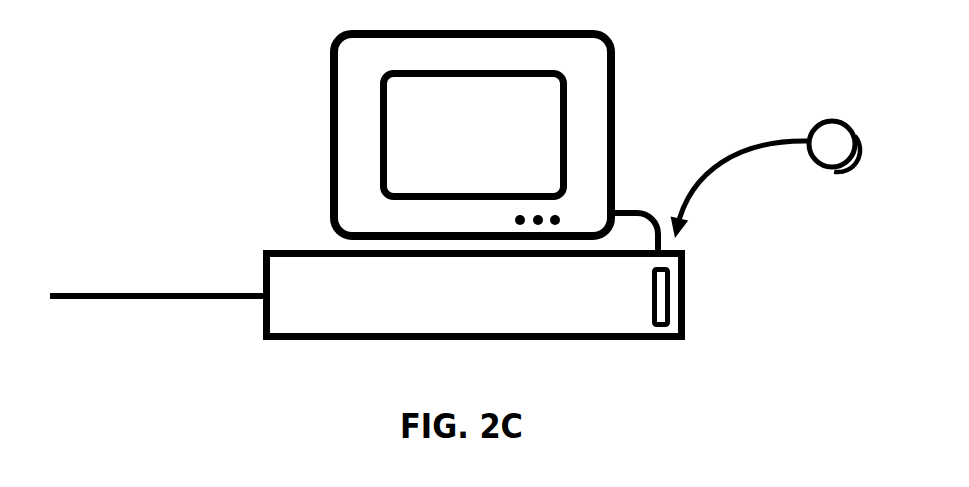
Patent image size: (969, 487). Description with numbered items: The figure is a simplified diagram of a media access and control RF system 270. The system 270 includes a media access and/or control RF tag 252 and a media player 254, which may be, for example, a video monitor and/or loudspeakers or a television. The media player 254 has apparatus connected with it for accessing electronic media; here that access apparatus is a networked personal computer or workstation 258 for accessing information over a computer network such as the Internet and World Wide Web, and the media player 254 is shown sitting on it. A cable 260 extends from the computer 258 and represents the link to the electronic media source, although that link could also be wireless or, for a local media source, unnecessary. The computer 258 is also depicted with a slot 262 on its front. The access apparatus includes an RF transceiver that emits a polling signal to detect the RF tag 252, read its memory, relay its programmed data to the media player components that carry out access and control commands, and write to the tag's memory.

The media access and control RF system 270 is at (174, 86).
The media player 254 is at (617, 110).
The networked personal computer or workstation 258 is at (605, 341).
The media slot / drive 262 is at (672, 293).
The cable 260 is at (137, 294).
The media access and/or control RF tag 252 is at (837, 142).